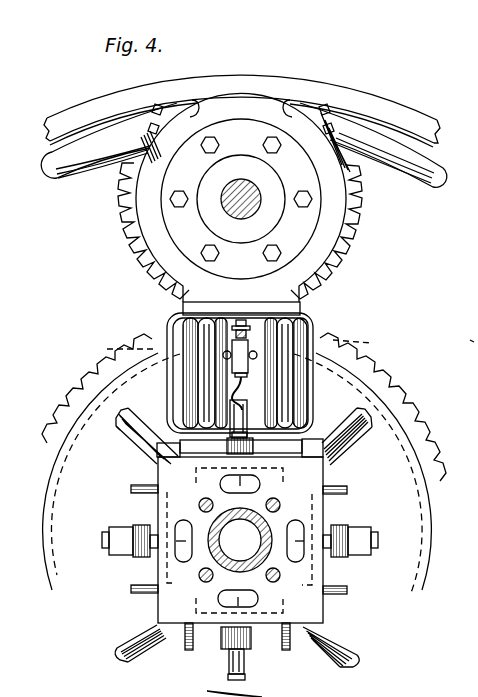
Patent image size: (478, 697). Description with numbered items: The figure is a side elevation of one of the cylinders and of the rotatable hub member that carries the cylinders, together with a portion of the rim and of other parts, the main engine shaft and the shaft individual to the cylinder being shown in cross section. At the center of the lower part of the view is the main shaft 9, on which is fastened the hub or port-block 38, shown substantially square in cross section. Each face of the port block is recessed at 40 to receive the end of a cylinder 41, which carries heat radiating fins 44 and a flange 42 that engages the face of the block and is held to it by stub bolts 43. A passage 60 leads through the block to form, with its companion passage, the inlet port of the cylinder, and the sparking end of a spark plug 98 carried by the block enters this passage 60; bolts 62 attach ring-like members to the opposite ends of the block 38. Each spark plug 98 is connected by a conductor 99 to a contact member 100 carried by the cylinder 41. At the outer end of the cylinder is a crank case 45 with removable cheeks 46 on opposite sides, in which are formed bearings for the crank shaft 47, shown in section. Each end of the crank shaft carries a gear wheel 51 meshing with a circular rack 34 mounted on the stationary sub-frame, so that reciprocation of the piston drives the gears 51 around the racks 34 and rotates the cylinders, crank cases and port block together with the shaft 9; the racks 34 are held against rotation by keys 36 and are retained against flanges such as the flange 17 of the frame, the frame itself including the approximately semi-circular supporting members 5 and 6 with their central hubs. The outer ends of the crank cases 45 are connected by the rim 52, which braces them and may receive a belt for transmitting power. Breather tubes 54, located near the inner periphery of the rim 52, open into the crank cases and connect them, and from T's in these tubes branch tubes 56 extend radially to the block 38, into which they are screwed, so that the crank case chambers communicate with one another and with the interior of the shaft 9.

The rim 52 is at (387, 108).
The breather tubes 54 is at (82, 168).
The gear wheel 51 is at (130, 240).
The crank case 45 is at (264, 204).
The removable cheeks 46 is at (241, 199).
The crank shaft 47 is at (241, 190).
The contact member 100 is at (316, 323).
The heat radiating fins 44 is at (200, 367).
The cylinder 41 is at (227, 385).
The conductor 99 is at (247, 388).
The flange 42 is at (185, 450).
The hub or port-block 38 is at (240, 540).
The shaft 9 is at (255, 558).
The passage 60 is at (183, 522).
The bolts 62 is at (275, 584).
The recess 40 is at (207, 612).
The stub bolts 43 is at (180, 432).
The spark plug 98 is at (226, 447).
The branch tubes 56 is at (244, 537).
The keys 36 is at (117, 433).
The flange 17 is at (417, 465).
The circular rack 34 is at (400, 377).
The supporting member 5 is at (239, 346).
The supporting member 6 is at (472, 463).